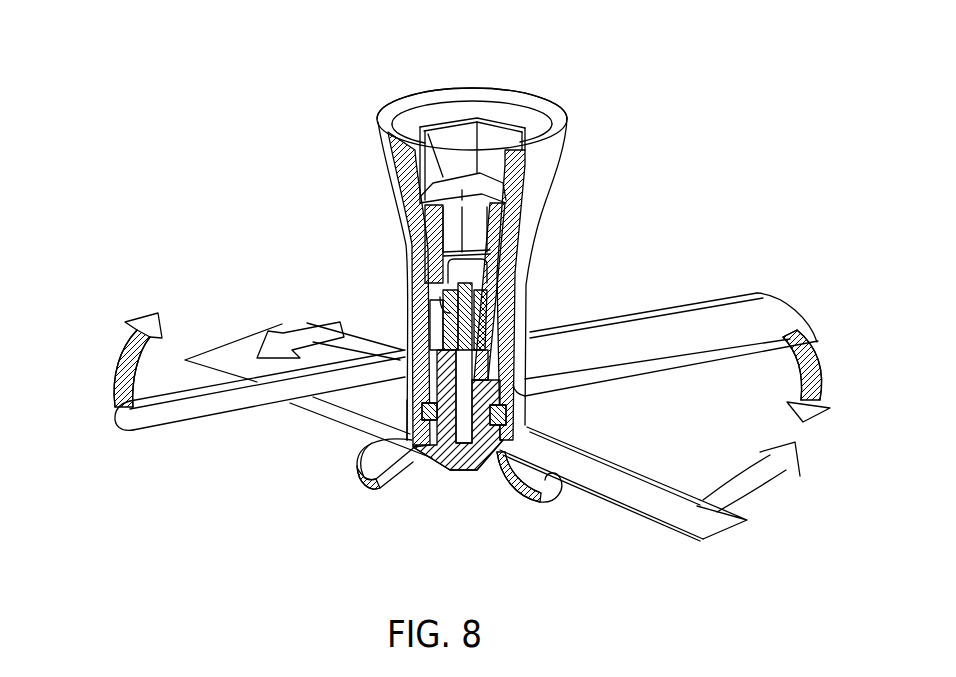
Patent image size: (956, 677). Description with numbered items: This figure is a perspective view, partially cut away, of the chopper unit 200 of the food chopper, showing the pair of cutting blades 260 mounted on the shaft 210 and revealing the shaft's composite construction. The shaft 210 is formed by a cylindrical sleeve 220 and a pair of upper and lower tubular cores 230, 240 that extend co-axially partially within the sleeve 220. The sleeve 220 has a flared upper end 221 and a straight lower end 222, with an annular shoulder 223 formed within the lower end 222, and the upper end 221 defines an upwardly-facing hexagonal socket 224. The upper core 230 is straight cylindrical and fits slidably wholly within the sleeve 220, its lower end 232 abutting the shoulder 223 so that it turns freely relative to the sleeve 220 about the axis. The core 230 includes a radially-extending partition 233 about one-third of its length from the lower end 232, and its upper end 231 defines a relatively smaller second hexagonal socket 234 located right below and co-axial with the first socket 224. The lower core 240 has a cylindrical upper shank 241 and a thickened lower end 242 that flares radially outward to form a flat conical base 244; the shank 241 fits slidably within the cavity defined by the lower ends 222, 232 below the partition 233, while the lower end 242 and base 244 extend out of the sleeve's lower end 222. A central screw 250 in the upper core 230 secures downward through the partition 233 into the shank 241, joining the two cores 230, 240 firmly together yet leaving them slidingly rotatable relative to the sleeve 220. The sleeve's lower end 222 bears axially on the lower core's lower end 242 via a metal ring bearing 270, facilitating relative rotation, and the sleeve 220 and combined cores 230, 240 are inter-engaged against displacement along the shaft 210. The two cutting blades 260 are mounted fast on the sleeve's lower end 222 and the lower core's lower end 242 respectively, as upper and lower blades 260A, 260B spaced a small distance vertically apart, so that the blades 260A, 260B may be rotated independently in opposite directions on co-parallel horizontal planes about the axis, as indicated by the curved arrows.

The chopper unit 200 is at (150, 205).
The shaft 210 is at (355, 190).
The sleeve 220 is at (530, 187).
The flared upper end 221 is at (498, 90).
The straight lower end 222 is at (410, 403).
The annular shoulder 223 is at (497, 347).
The hexagonal socket 224 is at (490, 147).
The upper core 230 is at (495, 286).
The upper end of the core 231 is at (443, 177).
The lower end of the core 232 is at (425, 334).
The partition 233 is at (448, 303).
The second hexagonal socket 234 is at (457, 195).
The lower core 240 is at (483, 382).
The upper shank 241 is at (445, 327).
The thickened lower end 242 is at (508, 430).
The flat conical base 244 is at (389, 478).
The central screw 250 is at (480, 308).
The cutting blades 260 is at (460, 449).
The upper blade 260A is at (158, 413).
The lower blade 260B is at (704, 521).
The ring bearing 270 is at (429, 418).